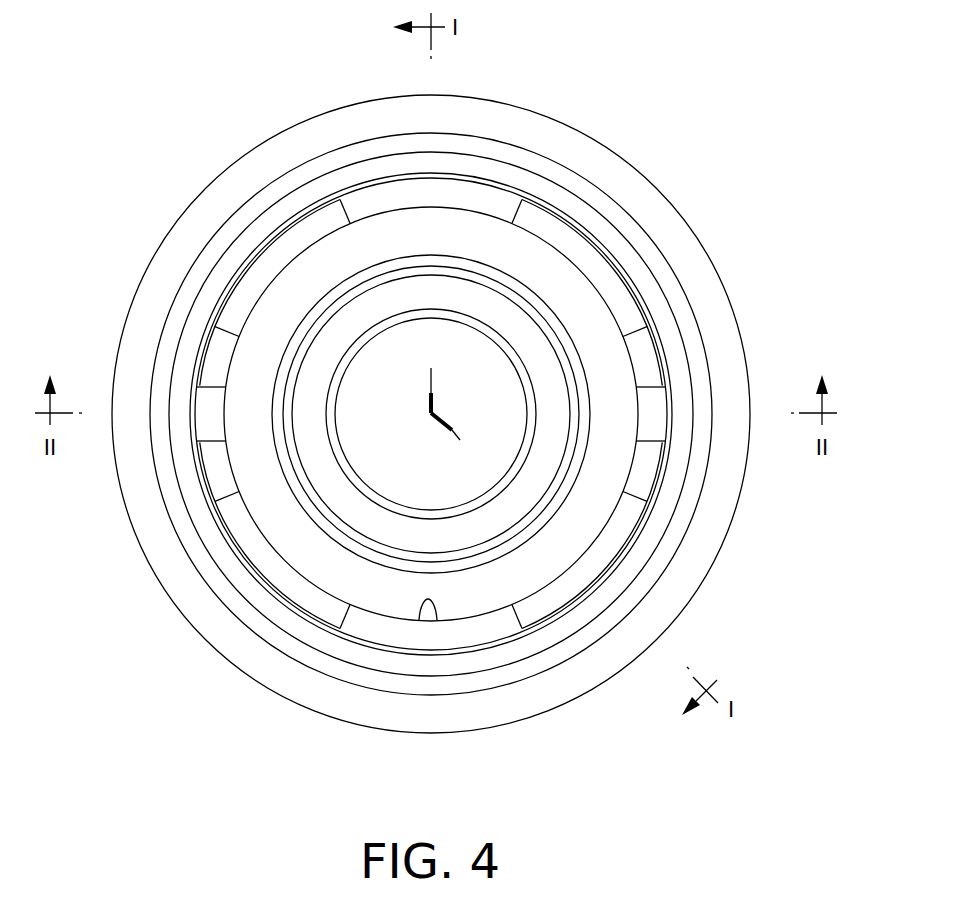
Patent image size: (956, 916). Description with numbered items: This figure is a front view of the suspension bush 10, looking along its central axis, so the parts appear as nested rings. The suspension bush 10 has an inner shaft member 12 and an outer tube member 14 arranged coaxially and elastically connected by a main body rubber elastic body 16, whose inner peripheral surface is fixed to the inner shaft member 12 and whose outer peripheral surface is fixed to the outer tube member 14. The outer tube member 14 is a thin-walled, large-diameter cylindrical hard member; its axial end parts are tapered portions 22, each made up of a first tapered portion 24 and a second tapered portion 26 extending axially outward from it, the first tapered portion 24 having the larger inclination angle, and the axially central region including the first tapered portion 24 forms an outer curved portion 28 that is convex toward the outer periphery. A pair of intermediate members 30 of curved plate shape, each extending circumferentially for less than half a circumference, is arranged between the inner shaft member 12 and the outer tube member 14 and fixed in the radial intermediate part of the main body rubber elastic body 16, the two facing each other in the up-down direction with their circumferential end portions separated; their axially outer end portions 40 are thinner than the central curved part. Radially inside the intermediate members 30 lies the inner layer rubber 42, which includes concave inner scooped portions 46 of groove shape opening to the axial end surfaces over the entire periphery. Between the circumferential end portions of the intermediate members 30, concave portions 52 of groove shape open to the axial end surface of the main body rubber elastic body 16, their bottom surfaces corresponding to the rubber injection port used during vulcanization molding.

The suspension bush 10 is at (676, 124).
The inner shaft member 12 is at (458, 247).
The outer tube member 14 is at (706, 216).
The main body rubber elastic body 16 is at (324, 488).
The tapered portion 22 is at (808, 562).
The first tapered portion 24 is at (712, 518).
The second tapered portion 26 is at (667, 550).
The outer curved portion 28 is at (738, 299).
The intermediate member 30 is at (288, 222).
The end portion 40 is at (253, 282).
The inner layer rubber 42 is at (512, 575).
The inner scooped portion 46 is at (412, 603).
The concave portion 52 is at (213, 440).